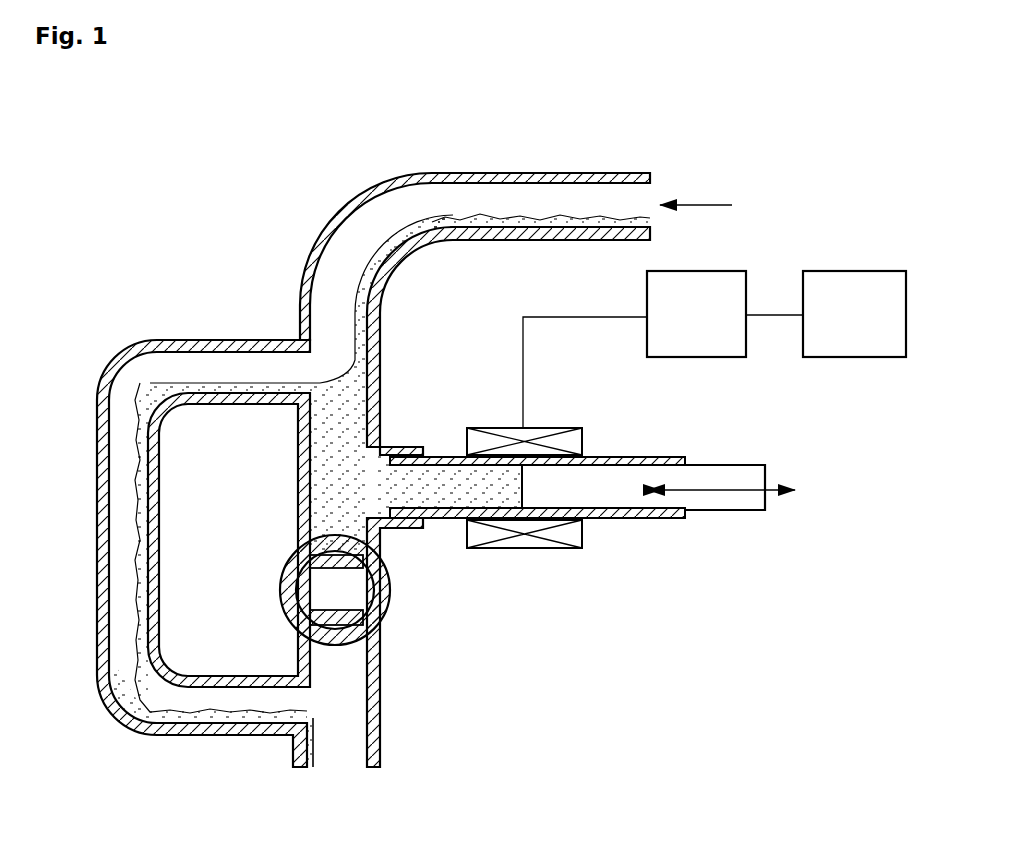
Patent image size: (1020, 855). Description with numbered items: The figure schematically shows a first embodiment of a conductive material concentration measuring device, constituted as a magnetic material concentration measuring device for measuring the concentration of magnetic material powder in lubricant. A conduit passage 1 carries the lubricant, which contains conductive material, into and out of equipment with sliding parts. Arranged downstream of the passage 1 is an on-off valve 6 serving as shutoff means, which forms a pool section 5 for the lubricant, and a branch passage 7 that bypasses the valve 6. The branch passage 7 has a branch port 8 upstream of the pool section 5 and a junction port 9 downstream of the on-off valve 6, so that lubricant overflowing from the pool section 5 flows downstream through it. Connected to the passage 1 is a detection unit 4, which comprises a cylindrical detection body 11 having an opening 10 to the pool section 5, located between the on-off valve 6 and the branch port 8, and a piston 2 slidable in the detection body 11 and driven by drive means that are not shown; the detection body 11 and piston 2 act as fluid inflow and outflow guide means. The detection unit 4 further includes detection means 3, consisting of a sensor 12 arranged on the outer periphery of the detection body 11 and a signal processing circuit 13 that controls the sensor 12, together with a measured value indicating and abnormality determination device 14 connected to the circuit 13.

The conduit passage 1 is at (314, 226).
The piston 2 is at (723, 522).
The detection means 3 is at (602, 432).
The detection unit 4 is at (679, 552).
The pool section 5 is at (345, 483).
The on-off valve 6 is at (390, 612).
The branch passage 7 is at (100, 620).
The branch port 8 is at (300, 373).
The junction port 9 is at (306, 705).
The opening 10 is at (385, 528).
The detection body 11 is at (628, 520).
The sensor 12 is at (527, 548).
The signal processing circuit 13 is at (725, 288).
The measured value indicating and abnormality determination device 14 is at (853, 282).